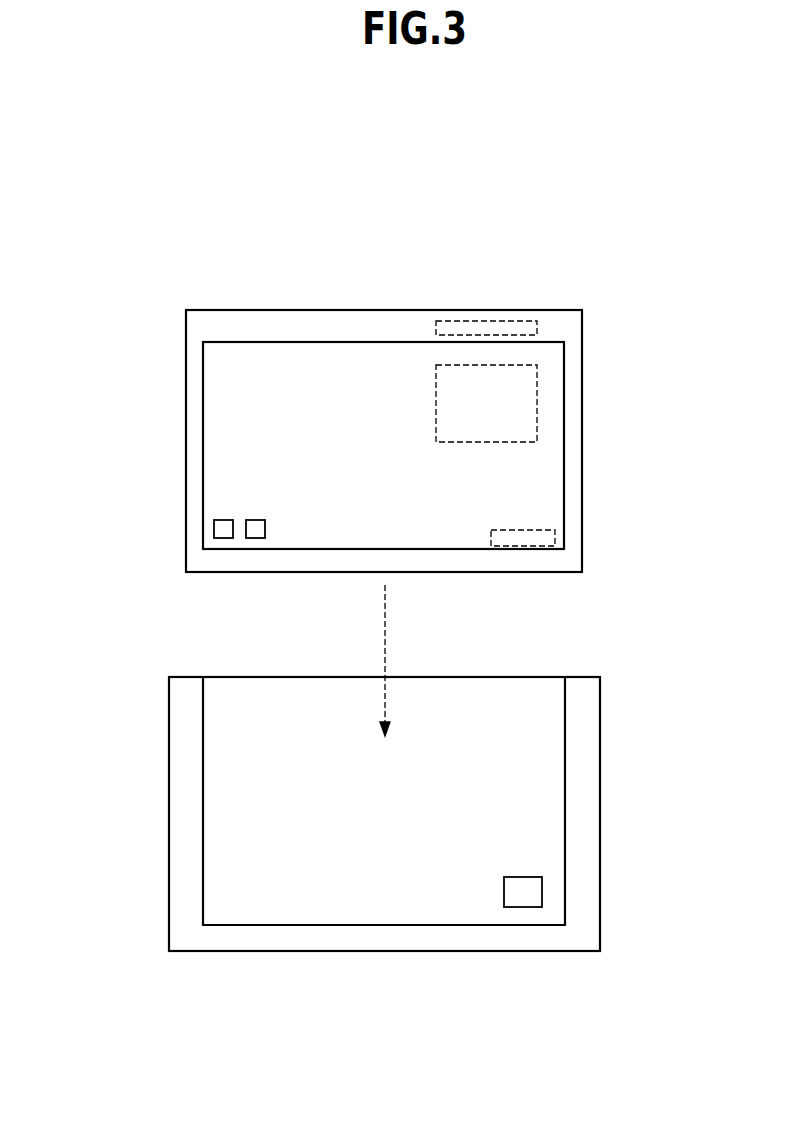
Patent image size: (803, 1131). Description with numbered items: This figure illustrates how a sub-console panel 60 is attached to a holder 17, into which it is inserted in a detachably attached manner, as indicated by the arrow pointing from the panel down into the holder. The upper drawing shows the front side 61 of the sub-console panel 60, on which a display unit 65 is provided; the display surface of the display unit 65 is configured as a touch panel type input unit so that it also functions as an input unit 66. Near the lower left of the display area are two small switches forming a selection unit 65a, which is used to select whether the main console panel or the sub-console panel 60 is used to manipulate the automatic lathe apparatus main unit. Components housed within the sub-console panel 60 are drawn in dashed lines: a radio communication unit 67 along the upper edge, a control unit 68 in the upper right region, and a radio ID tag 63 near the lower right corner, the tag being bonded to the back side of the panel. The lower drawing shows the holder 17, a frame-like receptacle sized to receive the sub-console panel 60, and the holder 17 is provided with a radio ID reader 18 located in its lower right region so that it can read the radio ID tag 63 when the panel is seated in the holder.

The sub-console panel 60 is at (389, 448).
The front side 61 is at (241, 326).
The display unit 65 is at (256, 484).
The input unit 66 is at (314, 445).
The selection unit 65a is at (256, 539).
The radio communication unit 67 is at (492, 324).
The control unit 68 is at (505, 416).
The radio ID tag 63 is at (532, 537).
The holder 17 is at (581, 760).
The radio ID reader 18 is at (523, 892).